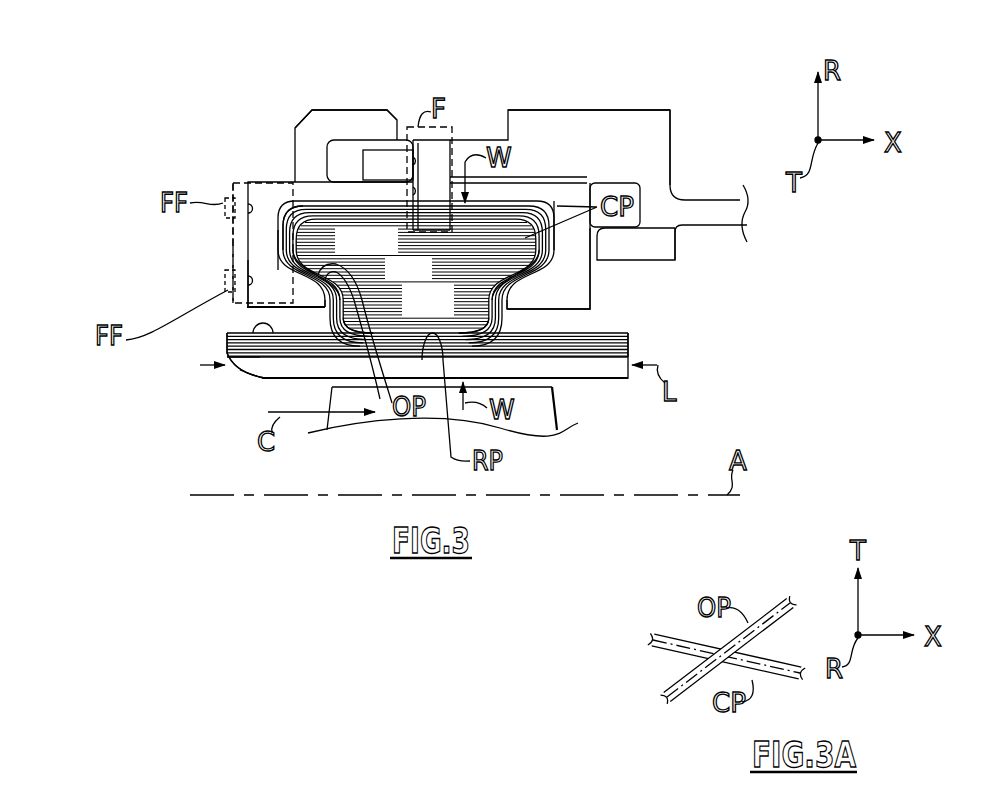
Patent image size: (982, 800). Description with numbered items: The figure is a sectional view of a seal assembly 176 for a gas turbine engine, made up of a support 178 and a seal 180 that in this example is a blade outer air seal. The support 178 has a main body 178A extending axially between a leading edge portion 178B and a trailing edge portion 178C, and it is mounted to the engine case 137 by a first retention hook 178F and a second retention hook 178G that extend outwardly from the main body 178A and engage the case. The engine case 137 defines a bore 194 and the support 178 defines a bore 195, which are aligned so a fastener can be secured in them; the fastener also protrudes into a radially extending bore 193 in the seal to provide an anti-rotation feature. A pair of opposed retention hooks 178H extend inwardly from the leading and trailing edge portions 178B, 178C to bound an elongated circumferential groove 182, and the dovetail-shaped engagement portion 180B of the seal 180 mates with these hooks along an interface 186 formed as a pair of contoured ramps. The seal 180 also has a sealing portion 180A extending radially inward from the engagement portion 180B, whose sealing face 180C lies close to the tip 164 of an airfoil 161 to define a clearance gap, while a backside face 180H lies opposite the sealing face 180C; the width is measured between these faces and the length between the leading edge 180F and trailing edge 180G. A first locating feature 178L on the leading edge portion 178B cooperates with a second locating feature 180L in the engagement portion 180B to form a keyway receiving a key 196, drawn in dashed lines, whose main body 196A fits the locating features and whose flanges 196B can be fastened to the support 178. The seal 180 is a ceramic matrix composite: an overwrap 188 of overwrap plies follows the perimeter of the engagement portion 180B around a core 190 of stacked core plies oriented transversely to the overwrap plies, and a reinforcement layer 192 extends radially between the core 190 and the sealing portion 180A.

The seal assembly 176 is at (191, 105).
The support 178 is at (247, 178).
The first locating feature 178L is at (268, 193).
The leading edge portion 178B is at (233, 188).
The first retention hook 178F is at (360, 110).
The bore 194 is at (400, 168).
The bore 195 is at (410, 200).
The radially extending bore 193 is at (438, 203).
The backside face 180H is at (489, 206).
The engine case 137 is at (669, 108).
The main body 178A is at (573, 197).
The engagement portion 180B is at (511, 201).
The second retention hook 178G is at (676, 232).
The trailing edge portion 178C is at (600, 308).
The retention hooks 178H is at (600, 312).
The interface 186 is at (525, 287).
The second locating feature 180L is at (298, 236).
The core 190 is at (452, 313).
The flanges 196B is at (232, 232).
The key 196 is at (232, 244).
The circumferential groove 182 is at (272, 250).
The main body 196A is at (232, 275).
The leading edge 180F is at (228, 340).
The seal 180 is at (224, 378).
The sealing portion 180A is at (166, 385).
The reinforcement layer 192 is at (243, 356).
The sealing face 180C is at (258, 378).
The overwrap 188 is at (273, 333).
The tip 164 is at (565, 372).
The airfoil 161 is at (559, 412).
The trailing edge 180G is at (630, 348).